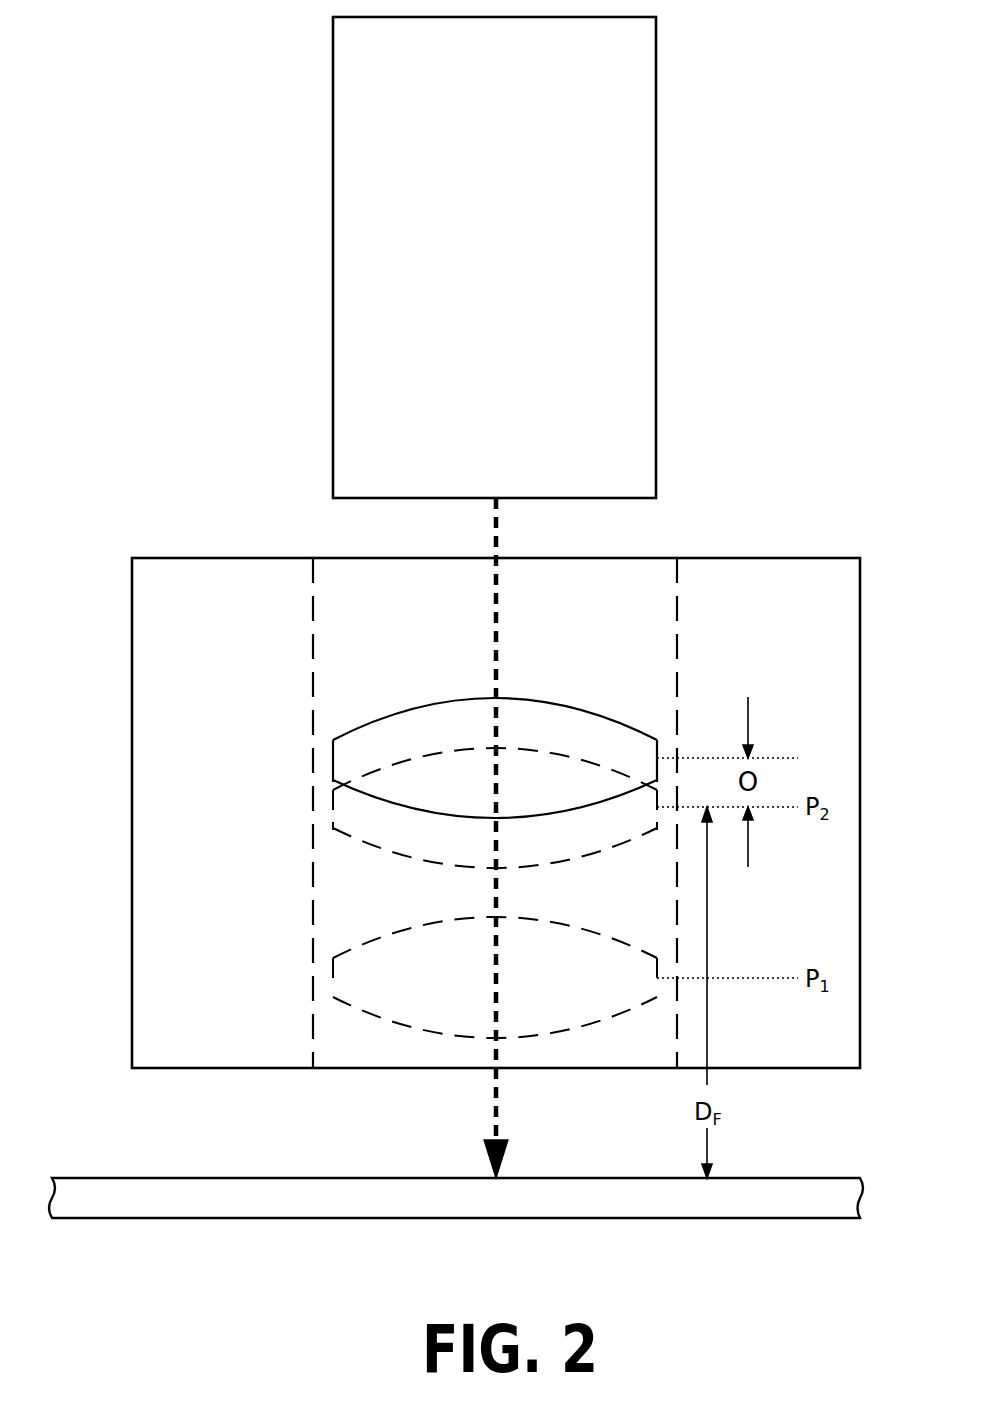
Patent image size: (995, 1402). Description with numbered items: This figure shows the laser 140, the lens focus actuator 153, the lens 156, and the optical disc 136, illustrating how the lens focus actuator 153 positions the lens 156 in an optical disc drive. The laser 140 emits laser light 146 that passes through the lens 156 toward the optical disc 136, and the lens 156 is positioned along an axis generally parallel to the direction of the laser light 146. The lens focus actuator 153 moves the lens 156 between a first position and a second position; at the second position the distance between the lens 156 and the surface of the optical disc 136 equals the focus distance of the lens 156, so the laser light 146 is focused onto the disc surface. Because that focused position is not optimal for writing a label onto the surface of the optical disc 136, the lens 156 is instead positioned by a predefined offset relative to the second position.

The laser 140 is at (518, 287).
The lens focus actuator 153 is at (738, 557).
The lens 156 is at (598, 715).
The laser light 146 is at (500, 1102).
The optical disc 136 is at (576, 1220).